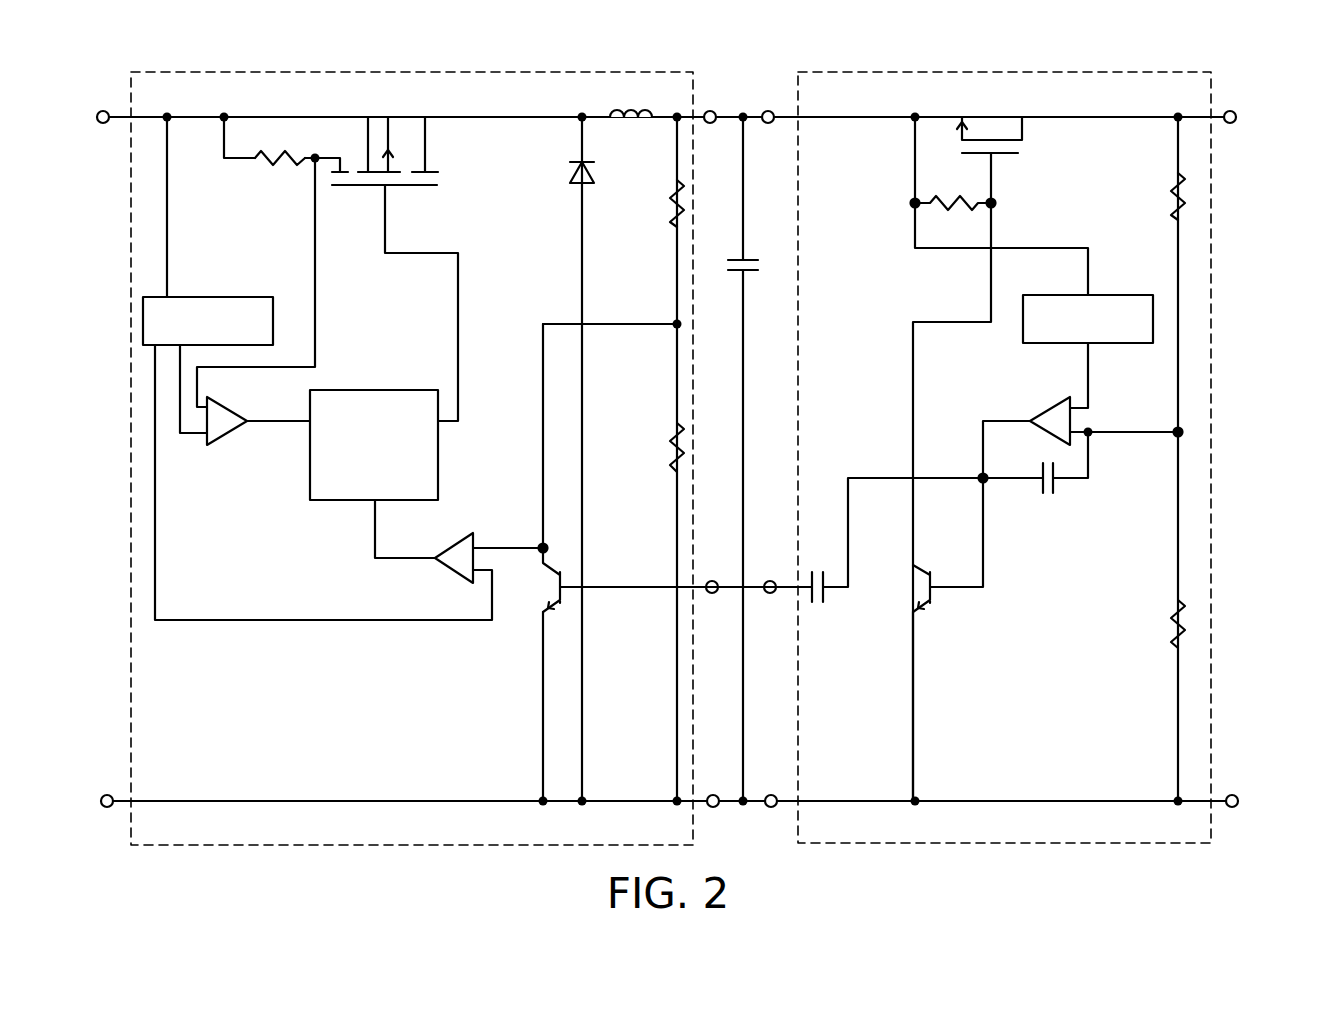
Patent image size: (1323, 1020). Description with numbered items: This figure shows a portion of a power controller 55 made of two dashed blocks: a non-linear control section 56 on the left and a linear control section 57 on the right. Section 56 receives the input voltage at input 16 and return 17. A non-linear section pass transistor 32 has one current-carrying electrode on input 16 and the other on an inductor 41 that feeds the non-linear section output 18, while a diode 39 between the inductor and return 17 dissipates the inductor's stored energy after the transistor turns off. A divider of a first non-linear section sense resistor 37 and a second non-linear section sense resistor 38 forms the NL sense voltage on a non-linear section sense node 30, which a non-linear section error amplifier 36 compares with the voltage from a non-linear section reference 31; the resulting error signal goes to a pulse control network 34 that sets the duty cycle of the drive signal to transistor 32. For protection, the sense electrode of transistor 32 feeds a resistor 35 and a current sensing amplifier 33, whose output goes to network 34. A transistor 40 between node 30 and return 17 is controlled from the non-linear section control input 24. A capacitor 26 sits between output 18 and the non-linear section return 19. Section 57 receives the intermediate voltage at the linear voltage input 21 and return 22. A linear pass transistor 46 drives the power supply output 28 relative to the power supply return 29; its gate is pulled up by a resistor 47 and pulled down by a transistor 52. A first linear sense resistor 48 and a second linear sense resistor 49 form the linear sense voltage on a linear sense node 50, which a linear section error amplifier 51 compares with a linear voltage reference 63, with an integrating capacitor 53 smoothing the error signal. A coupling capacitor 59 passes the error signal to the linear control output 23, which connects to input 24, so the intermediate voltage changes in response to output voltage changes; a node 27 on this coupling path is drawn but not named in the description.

The input 16 is at (96, 118).
The return 17 is at (100, 801).
The non-linear section output 18 is at (710, 111).
The non-linear section return 19 is at (717, 806).
The linear voltage input 21 is at (768, 111).
The return 22 is at (771, 795).
The linear control output 23 is at (770, 580).
The non-linear section control input 24 is at (714, 595).
The capacitor 26 is at (760, 268).
The node 27 is at (980, 474).
The power supply output 28 is at (1236, 112).
The power supply return 29 is at (1239, 802).
The non-linear section sense node 30 is at (540, 544).
The non-linear section reference 31 is at (213, 297).
The non-linear section pass transistor 32 is at (440, 183).
The current sensing amplifier 33 is at (231, 443).
The pulse control network 34 is at (360, 390).
The resistor 35 is at (288, 165).
The non-linear section error amplifier 36 is at (471, 534).
The first non-linear section sense resistor 37 is at (672, 205).
The second non-linear section sense resistor 38 is at (672, 450).
The diode 39 is at (571, 180).
The transistor 40 is at (546, 597).
The inductor 41 is at (629, 120).
The linear pass transistor 46 is at (1020, 147).
The resistor 47 is at (962, 201).
The first linear sense resistor 48 is at (1175, 201).
The second linear sense resistor 49 is at (1175, 627).
The linear sense node 50 is at (1175, 436).
The linear section error amplifier 51 is at (1048, 405).
The transistor 52 is at (928, 601).
The integrating capacitor 53 is at (1048, 495).
The power controller 55 is at (175, 899).
The non-linear control section 56 is at (333, 846).
The linear control section 57 is at (1078, 845).
The coupling capacitor 59 is at (818, 605).
The linear voltage reference 63 is at (1100, 295).